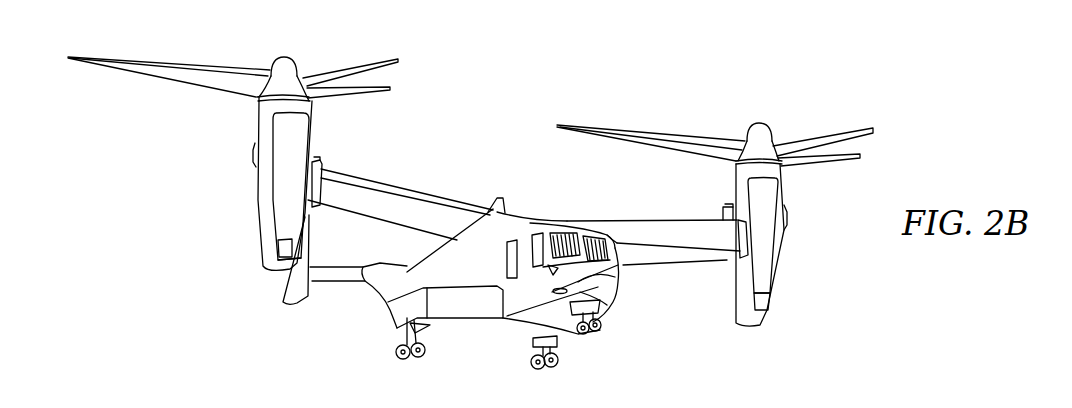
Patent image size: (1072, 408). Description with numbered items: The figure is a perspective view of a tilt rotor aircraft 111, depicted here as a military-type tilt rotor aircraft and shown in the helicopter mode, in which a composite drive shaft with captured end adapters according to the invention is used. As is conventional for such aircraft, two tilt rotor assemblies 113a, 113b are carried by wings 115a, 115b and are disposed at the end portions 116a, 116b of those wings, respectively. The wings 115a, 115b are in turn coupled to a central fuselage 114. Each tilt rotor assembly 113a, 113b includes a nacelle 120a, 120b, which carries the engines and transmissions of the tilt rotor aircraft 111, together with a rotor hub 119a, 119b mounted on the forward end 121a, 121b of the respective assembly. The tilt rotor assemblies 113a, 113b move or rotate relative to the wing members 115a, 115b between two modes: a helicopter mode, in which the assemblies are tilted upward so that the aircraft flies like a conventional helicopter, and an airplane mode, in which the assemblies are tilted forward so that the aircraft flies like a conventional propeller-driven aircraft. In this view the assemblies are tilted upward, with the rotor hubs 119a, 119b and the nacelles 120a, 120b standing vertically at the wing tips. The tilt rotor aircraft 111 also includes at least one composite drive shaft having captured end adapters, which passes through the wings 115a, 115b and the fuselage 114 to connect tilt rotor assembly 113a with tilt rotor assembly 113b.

The tilt rotor aircraft 111 is at (333, 348).
The tilt rotor assembly 113a is at (797, 265).
The tilt rotor assembly 113b is at (240, 210).
The fuselage 114 is at (483, 340).
The wing 115a is at (637, 218).
The wing 115b is at (413, 190).
The end portion of wing 116a is at (728, 270).
The end portion of wing 116b is at (330, 157).
The rotor hub 119a is at (775, 143).
The rotor hub 119b is at (270, 70).
The nacelle 120a is at (770, 308).
The nacelle 120b is at (263, 260).
The forward end of tilt rotor assembly 121a is at (780, 170).
The forward end of tilt rotor assembly 121b is at (258, 103).